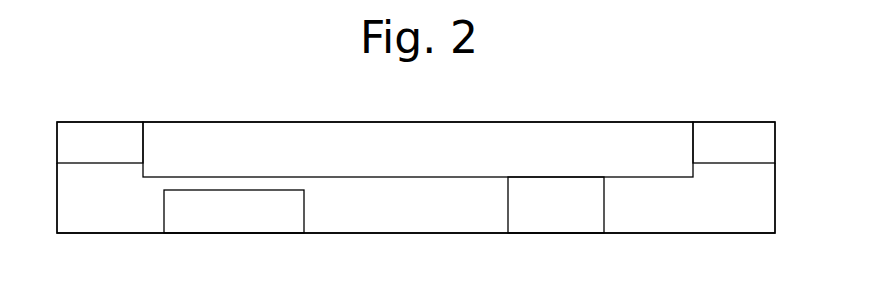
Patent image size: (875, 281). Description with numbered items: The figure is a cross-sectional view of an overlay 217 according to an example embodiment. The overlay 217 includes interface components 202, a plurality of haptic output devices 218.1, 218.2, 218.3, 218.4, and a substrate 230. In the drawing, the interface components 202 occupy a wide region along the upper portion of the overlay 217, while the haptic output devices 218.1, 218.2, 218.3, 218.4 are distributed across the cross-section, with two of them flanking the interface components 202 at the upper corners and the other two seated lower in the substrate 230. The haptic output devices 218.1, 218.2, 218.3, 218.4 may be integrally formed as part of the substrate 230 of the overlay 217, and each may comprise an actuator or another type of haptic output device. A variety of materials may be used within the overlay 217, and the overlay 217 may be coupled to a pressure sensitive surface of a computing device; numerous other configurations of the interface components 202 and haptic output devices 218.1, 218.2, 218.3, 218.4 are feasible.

The interface components 202 is at (418, 149).
The overlay 217 is at (775, 178).
The haptic output device 218.1 is at (100, 142).
The haptic output device 218.2 is at (234, 211).
The haptic output device 218.3 is at (556, 205).
The haptic output device 218.4 is at (734, 142).
The substrate 230 is at (69, 224).